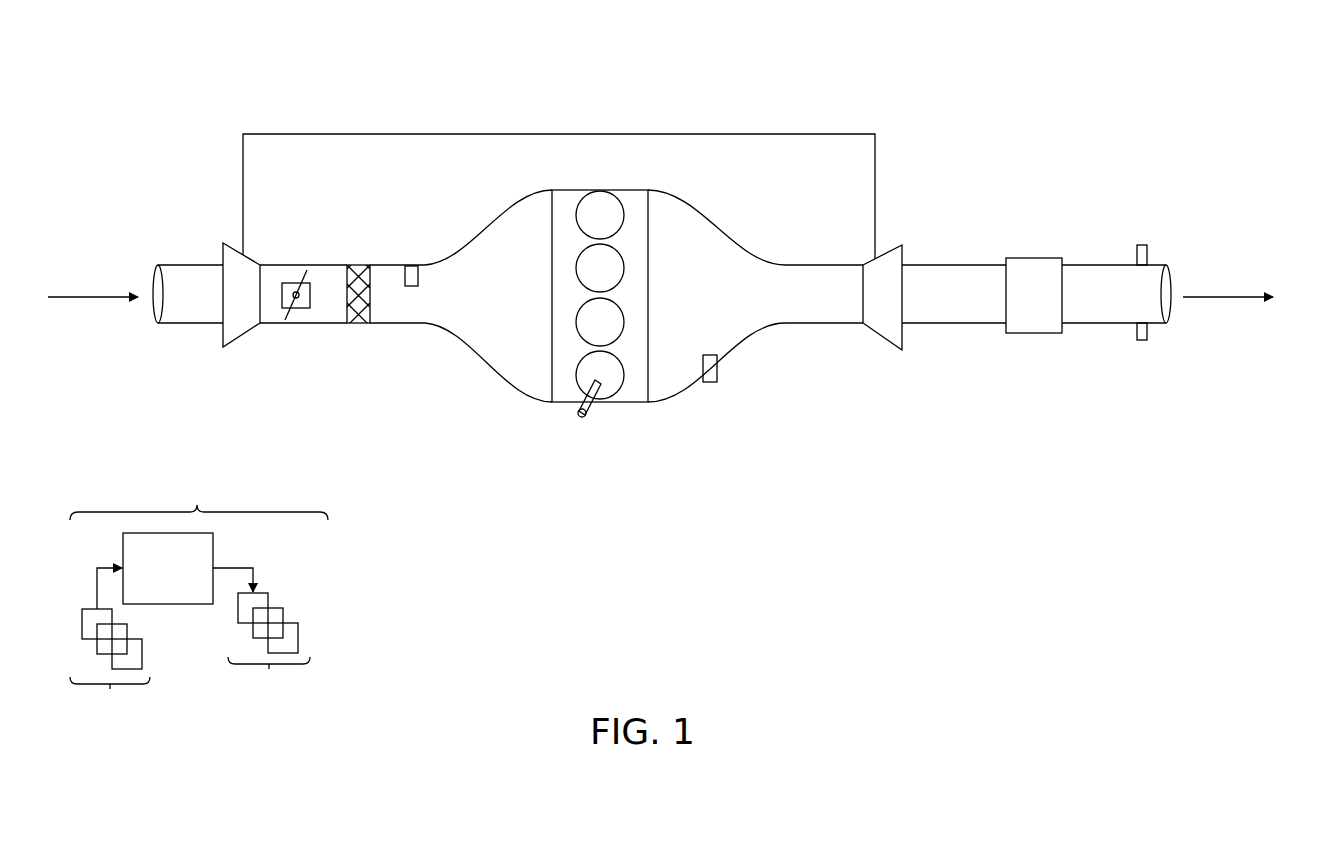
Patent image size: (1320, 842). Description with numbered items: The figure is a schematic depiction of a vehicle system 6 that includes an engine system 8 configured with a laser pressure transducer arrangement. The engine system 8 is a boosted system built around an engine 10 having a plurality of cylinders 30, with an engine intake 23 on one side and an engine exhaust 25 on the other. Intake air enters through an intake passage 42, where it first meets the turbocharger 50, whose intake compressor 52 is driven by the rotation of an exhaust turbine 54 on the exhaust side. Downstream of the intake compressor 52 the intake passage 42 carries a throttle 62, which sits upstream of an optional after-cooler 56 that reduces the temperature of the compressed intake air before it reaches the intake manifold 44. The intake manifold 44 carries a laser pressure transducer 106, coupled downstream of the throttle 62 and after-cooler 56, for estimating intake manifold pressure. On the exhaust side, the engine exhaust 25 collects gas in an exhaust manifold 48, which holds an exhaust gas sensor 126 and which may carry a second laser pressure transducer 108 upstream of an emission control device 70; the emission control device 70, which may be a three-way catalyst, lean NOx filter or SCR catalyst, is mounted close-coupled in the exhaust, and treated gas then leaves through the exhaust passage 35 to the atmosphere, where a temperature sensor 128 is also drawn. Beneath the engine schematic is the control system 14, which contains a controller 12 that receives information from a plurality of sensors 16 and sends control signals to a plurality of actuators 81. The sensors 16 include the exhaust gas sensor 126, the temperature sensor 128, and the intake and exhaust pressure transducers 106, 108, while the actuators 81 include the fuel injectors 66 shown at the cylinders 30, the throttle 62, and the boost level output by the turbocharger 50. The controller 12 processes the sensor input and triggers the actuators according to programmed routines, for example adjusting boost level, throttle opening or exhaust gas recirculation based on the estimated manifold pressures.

The vehicle system 6 is at (100, 80).
The engine system 8 is at (982, 80).
The engine 10 is at (618, 296).
The controller 12 is at (168, 568).
The control system 14 is at (199, 592).
The sensors 16 is at (110, 650).
The engine intake 23 is at (210, 227).
The engine exhaust 25 is at (750, 243).
The cylinders 30 is at (621, 207).
The exhaust passage 35 is at (1102, 265).
The intake passage 42 is at (195, 325).
The intake manifold 44 is at (516, 306).
The exhaust manifold 48 is at (732, 306).
The turbocharger 50 is at (712, 113).
The intake compressor 52 is at (257, 263).
The exhaust turbine 54 is at (580, 133).
The after-cooler 56 is at (357, 325).
The throttle 62 is at (308, 306).
The fuel injectors 66 is at (597, 410).
The emission control device 70 is at (1046, 306).
The actuators 81 is at (261, 642).
The laser pressure transducer 106 is at (410, 266).
The laser pressure transducer 108 is at (1137, 256).
The exhaust gas sensor 126 is at (720, 368).
The temperature sensor 128 is at (1137, 329).